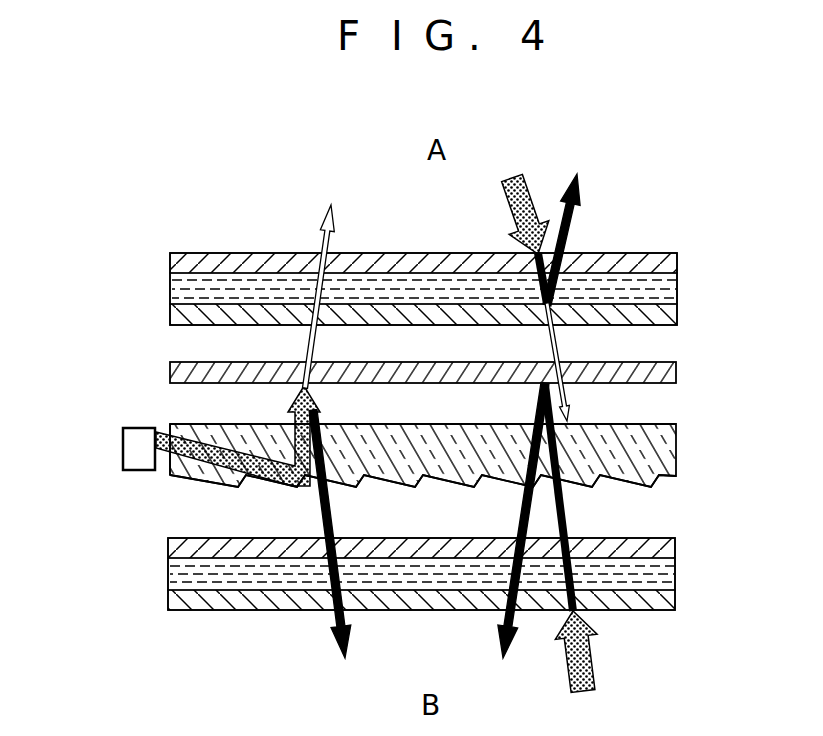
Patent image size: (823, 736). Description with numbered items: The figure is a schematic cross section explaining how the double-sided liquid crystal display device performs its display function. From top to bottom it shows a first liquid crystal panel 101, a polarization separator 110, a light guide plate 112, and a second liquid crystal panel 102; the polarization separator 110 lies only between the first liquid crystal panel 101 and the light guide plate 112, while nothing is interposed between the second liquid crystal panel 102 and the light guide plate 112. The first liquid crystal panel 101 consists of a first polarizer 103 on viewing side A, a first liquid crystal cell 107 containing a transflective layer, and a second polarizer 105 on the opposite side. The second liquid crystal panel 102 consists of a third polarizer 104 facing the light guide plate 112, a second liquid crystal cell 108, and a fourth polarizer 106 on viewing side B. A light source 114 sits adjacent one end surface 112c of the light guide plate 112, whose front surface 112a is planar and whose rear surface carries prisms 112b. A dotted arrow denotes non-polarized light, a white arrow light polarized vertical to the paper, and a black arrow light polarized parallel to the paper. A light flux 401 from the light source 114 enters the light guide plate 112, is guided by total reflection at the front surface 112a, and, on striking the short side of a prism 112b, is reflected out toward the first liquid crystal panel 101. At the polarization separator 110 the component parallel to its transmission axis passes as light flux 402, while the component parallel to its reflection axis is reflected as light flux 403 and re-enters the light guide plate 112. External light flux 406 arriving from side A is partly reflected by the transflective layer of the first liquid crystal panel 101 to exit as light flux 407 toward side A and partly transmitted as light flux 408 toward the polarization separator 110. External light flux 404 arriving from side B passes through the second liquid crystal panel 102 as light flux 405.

The first liquid crystal panel 101 is at (431, 288).
The second liquid crystal panel 102 is at (430, 573).
The first polarizer 103 is at (677, 259).
The third polarizer 104 is at (677, 543).
The second polarizer 105 is at (677, 312).
The fourth polarizer 106 is at (677, 598).
The first liquid crystal cell 107 is at (677, 291).
The second liquid crystal cell 108 is at (677, 572).
The polarization separator 110 is at (677, 373).
The light guide plate 112 is at (427, 456).
The front surface 112a is at (397, 424).
The prisms 112b is at (392, 487).
The end surface 112c is at (166, 470).
The light source 114 is at (123, 452).
The light flux 401 is at (294, 410).
The light flux 402 is at (322, 242).
The light flux 403 is at (333, 622).
The light flux 404 is at (597, 643).
The light flux 405 is at (496, 622).
The light flux 406 is at (535, 183).
The light flux 407 is at (575, 210).
The light flux 408 is at (560, 342).